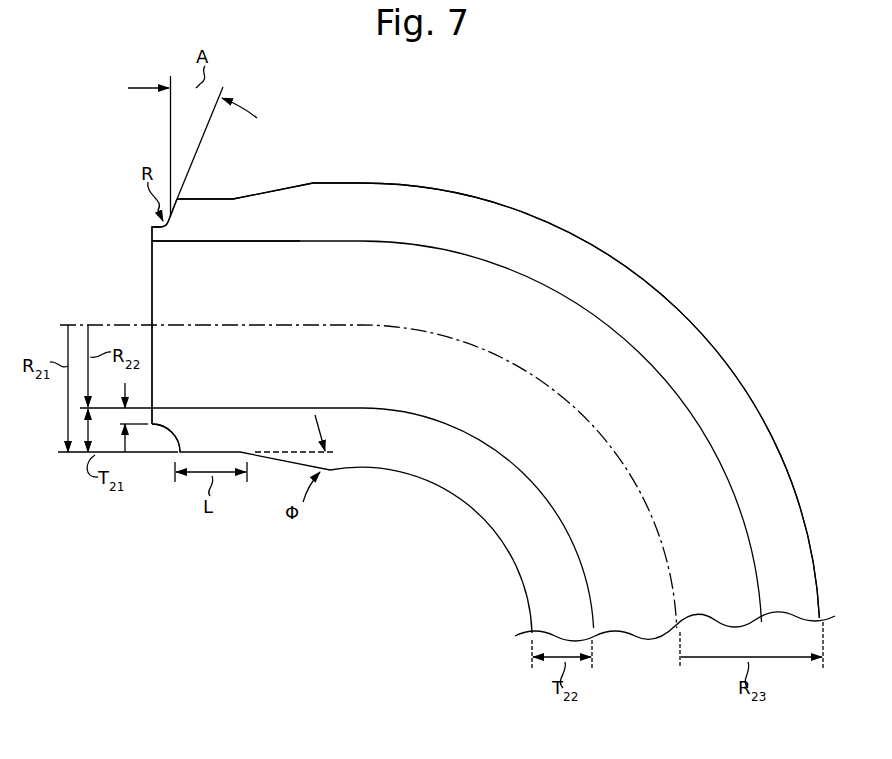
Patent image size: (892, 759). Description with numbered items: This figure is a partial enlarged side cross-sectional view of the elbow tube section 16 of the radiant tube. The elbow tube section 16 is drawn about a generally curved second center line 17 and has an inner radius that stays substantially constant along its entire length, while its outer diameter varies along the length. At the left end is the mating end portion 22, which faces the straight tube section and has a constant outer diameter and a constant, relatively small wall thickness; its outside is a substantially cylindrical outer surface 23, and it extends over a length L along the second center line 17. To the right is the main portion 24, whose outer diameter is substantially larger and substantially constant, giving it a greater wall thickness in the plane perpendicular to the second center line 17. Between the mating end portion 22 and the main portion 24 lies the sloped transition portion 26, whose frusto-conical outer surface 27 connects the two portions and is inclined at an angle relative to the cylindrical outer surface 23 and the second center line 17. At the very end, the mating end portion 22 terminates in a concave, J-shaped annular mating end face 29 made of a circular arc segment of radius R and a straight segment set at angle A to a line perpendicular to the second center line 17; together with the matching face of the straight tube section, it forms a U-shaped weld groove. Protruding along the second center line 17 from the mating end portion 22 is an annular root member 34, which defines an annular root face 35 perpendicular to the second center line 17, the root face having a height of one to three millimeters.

The elbow tube section 16 is at (612, 252).
The second center line 17 is at (668, 546).
The mating end portion 22 is at (197, 208).
The cylindrical outer surface 23 is at (233, 200).
The main portion 24 is at (705, 346).
The sloped transition portion 26 is at (315, 197).
The frusto-conical outer surface 27 is at (290, 193).
The mating end face 29 is at (171, 436).
The root member 34 is at (160, 244).
The root face 35 is at (150, 233).